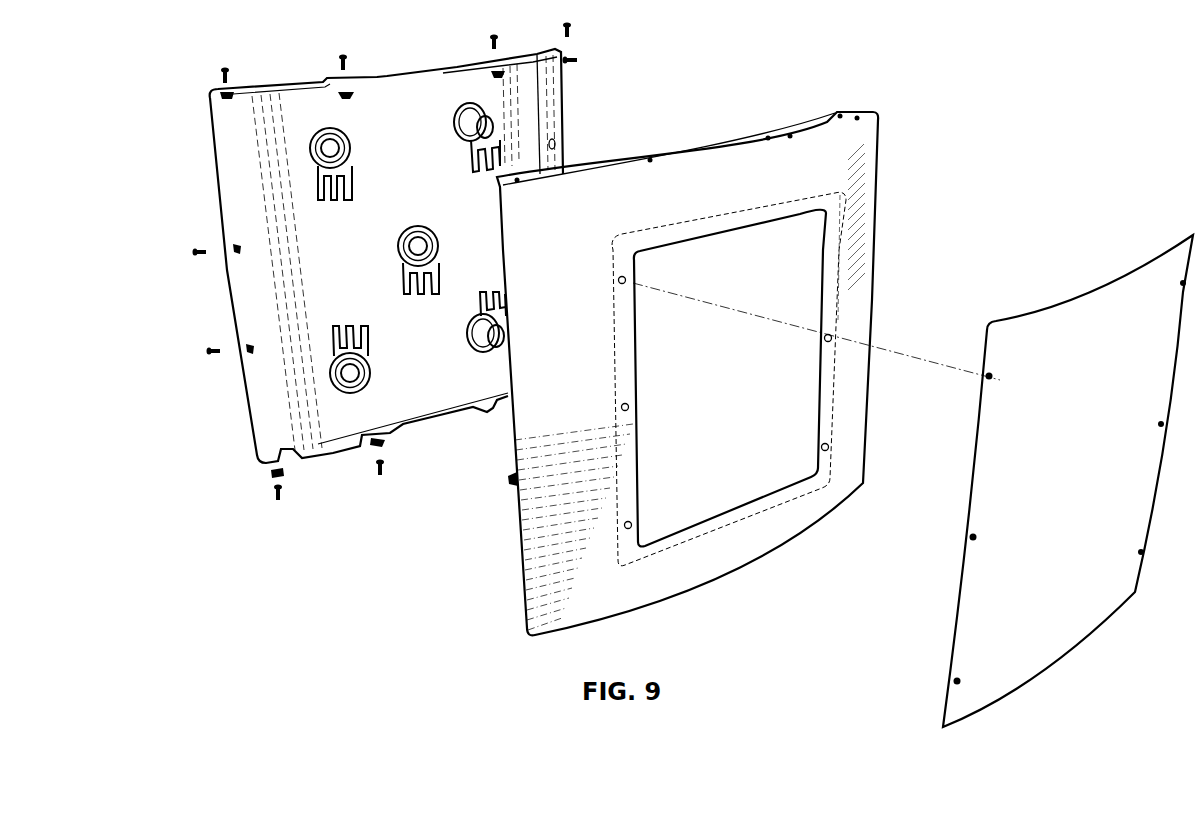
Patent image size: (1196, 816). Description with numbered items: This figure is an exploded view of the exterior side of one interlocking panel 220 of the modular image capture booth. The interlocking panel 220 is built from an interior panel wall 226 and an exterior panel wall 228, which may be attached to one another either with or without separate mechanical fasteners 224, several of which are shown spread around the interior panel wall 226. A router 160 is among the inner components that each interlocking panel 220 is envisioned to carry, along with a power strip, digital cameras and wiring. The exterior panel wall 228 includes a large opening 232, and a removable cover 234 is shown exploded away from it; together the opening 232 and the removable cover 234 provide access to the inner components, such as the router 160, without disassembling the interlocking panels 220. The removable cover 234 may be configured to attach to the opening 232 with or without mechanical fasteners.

The interlocking panel 220 is at (360, 611).
The interior panel wall 226 is at (407, 82).
The router 160 is at (468, 108).
The mechanical fasteners 224 is at (336, 60).
The exterior panel wall 228 is at (815, 130).
The opening 232 is at (747, 232).
The removable cover 234 is at (1117, 300).